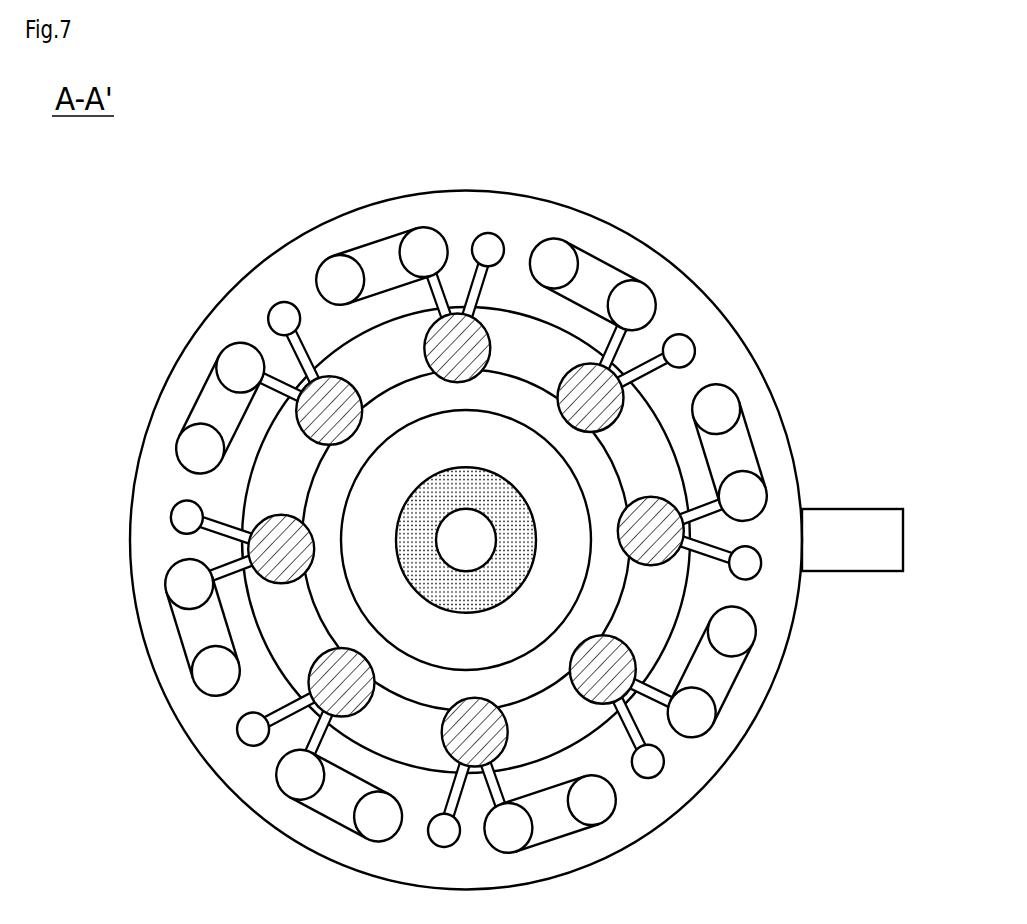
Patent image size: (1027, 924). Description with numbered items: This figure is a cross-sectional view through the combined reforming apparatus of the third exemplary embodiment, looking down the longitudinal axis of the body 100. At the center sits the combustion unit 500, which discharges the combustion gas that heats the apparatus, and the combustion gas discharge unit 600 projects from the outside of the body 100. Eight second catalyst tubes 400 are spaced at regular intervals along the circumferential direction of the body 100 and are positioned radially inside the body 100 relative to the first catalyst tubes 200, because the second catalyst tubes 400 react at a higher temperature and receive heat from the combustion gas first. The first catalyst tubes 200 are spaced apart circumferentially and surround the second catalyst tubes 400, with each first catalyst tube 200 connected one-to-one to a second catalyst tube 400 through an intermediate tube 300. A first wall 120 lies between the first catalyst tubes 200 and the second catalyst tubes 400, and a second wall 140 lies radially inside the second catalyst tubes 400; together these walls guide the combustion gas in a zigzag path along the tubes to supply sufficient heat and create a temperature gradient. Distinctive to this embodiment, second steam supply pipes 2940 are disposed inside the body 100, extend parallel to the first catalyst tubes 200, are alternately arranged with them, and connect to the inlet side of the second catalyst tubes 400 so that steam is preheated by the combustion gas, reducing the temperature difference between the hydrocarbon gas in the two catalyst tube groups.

The body 100 is at (466, 504).
The first wall 120 is at (500, 305).
The second wall 140 is at (353, 490).
The first catalyst tube 200 is at (465, 494).
The intermediate tube 300 is at (640, 340).
The second catalyst tube 400 is at (640, 393).
The combustion unit 500 is at (508, 551).
The combustion gas discharge unit 600 is at (871, 458).
The second steam supply pipe 2940 is at (648, 760).